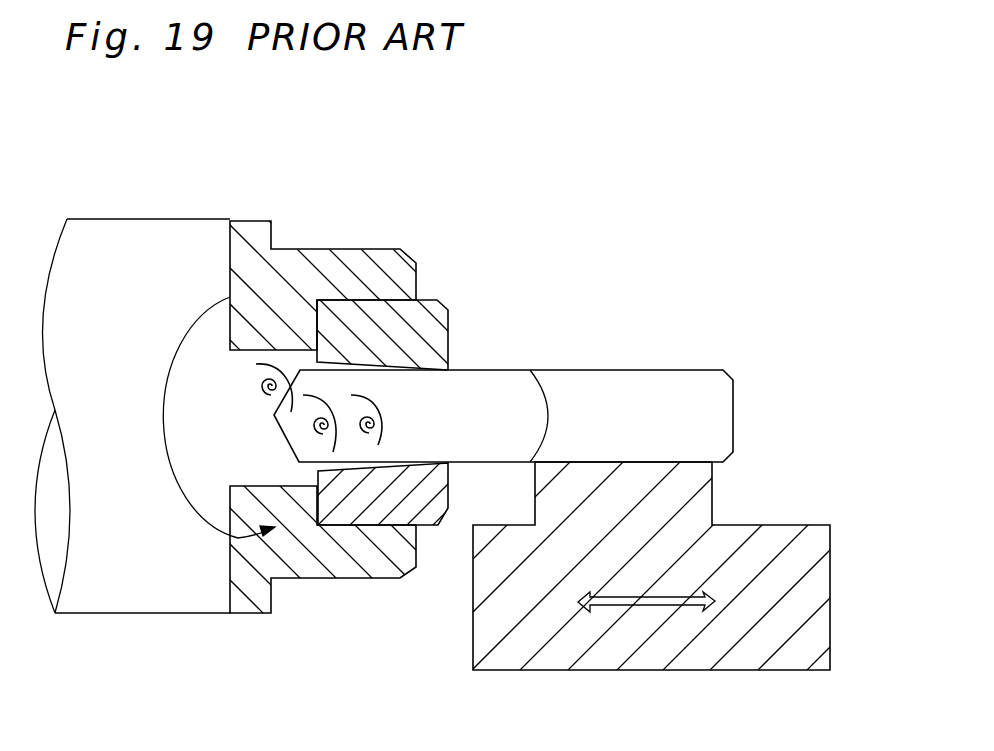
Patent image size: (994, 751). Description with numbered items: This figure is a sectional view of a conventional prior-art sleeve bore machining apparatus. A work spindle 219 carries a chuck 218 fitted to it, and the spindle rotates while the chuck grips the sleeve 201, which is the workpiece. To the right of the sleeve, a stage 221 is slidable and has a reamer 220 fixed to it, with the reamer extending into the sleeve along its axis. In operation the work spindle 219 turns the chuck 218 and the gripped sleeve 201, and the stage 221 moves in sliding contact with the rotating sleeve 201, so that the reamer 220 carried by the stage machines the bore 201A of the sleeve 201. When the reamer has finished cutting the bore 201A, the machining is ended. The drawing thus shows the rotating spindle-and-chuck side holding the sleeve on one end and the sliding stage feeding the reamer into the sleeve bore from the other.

The chuck 218 is at (315, 270).
The sleeve 201 is at (425, 320).
The bore 201A is at (353, 462).
The reamer 220 is at (500, 383).
The stage 221 is at (687, 495).
The work spindle 219 is at (178, 582).